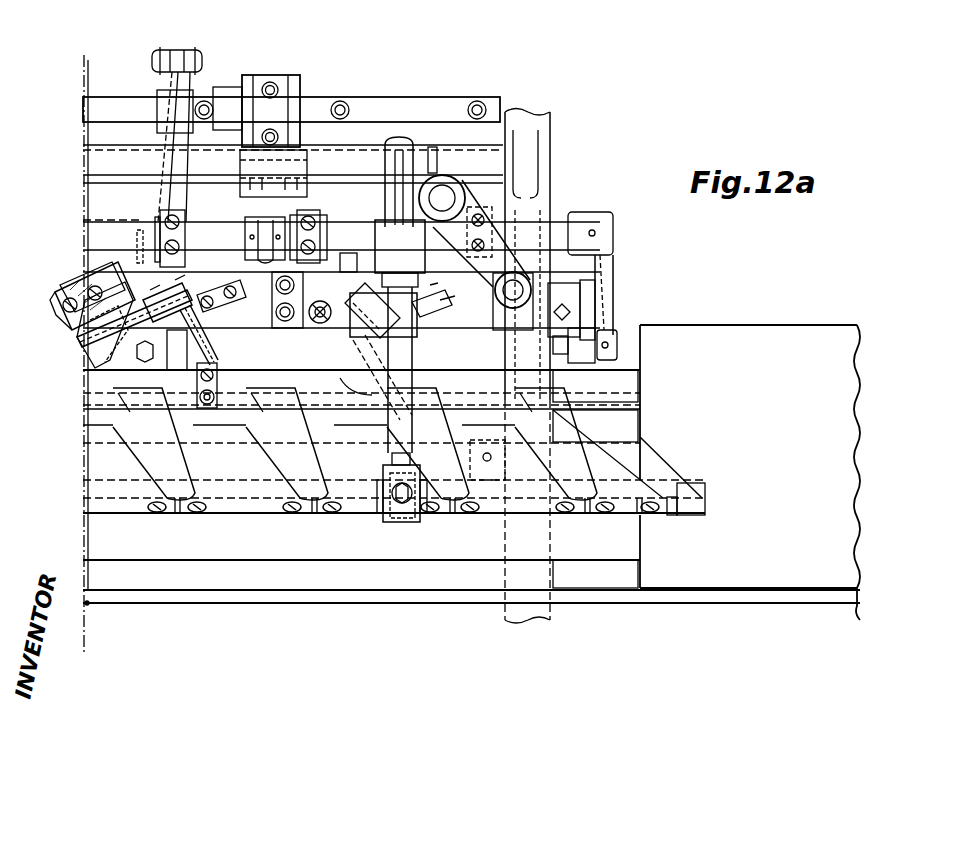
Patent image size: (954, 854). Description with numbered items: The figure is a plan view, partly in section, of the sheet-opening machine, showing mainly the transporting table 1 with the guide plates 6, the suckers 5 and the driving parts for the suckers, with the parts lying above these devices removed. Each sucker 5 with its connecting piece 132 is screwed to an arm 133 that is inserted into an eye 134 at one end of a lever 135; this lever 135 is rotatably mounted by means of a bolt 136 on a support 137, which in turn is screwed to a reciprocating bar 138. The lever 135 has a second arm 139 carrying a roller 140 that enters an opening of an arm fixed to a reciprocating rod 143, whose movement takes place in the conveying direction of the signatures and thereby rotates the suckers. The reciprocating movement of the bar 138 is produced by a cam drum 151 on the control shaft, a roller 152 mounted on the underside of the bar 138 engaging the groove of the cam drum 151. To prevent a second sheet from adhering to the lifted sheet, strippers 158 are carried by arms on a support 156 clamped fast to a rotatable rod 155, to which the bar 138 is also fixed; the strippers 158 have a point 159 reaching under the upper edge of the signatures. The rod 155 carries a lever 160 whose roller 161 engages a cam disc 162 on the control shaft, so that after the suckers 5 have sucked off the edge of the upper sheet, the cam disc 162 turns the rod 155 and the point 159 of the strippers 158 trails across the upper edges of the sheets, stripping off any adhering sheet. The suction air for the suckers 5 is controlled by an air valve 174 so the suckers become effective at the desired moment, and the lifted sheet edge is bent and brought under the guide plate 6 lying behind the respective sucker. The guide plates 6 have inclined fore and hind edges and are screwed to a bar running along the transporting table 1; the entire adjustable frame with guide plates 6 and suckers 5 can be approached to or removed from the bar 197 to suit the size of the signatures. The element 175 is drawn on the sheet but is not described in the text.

The transporting table 1 is at (745, 332).
The sucker 5 is at (188, 408).
The guide plate 6 is at (140, 414).
The connecting piece 132 is at (207, 405).
The arm 133 is at (208, 352).
The eye 134 is at (152, 310).
The lever 135 is at (86, 352).
The bolt 136 is at (92, 356).
The support 137 is at (56, 292).
The reciprocating bar 138 is at (67, 280).
The second arm 139 is at (62, 323).
The roller 140 is at (125, 303).
The reciprocating rod 143 is at (433, 328).
The cam drum 151 is at (348, 252).
The roller 152 is at (318, 300).
The rotatable rod 155 is at (92, 228).
The support 156 is at (160, 224).
The stripper 158 is at (441, 469).
The point 159 is at (378, 420).
The lever 160 is at (605, 275).
The roller 161 is at (585, 332).
The cam disc 162 is at (583, 305).
The air valve 174 is at (294, 90).
The top bar 175 is at (374, 101).
The bar 197 is at (376, 605).